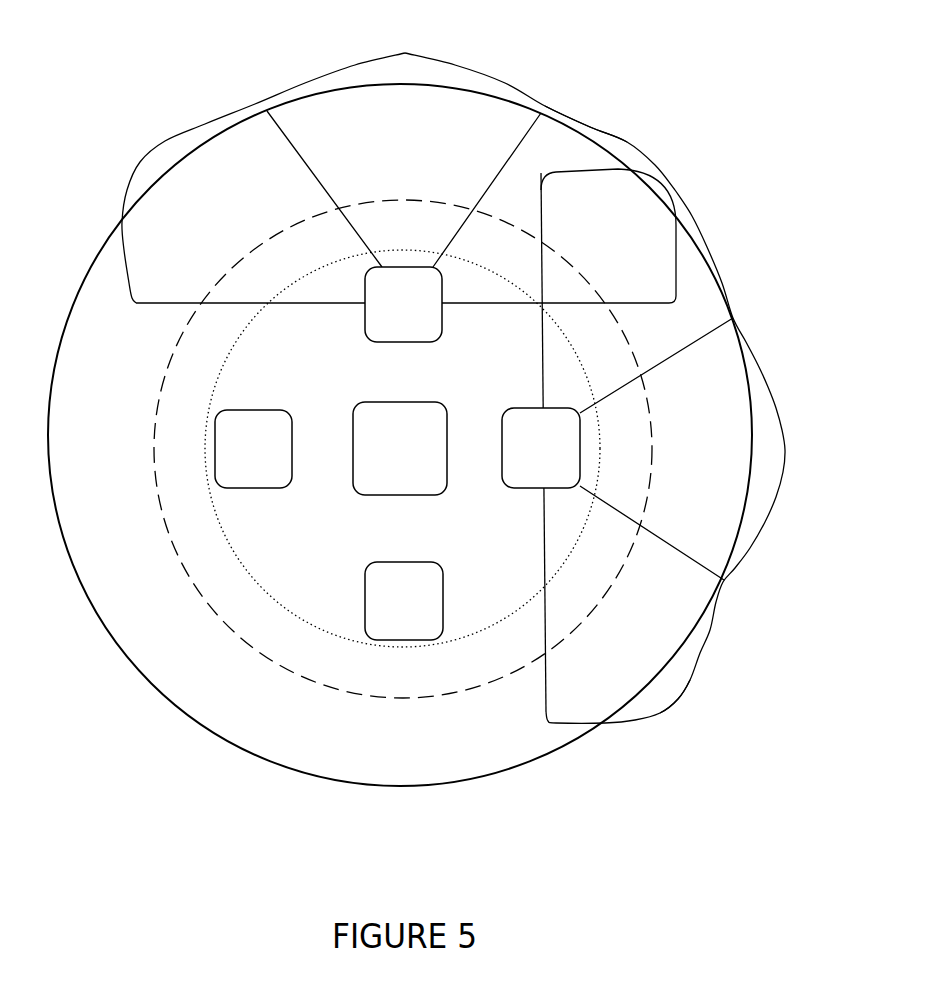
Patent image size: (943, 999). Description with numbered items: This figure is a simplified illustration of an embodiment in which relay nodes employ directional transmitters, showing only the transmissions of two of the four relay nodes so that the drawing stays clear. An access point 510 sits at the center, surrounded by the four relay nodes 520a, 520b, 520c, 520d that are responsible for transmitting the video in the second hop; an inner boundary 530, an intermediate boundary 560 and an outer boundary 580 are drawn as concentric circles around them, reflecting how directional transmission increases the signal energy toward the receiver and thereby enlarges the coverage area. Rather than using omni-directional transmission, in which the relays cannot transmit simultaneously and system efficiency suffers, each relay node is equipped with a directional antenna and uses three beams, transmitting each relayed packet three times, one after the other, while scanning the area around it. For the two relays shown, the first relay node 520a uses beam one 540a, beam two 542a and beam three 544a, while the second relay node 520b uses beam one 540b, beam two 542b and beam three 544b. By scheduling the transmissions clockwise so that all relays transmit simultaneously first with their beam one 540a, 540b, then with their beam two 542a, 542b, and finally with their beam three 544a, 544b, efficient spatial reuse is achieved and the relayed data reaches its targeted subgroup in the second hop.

The access point 510 is at (400, 495).
The relay node 520a is at (413, 342).
The relay node 520b is at (503, 437).
The relay node 520c is at (366, 592).
The relay node 520d is at (254, 488).
The inner coverage boundary 530 is at (237, 337).
The beam 1 540a is at (153, 150).
The beam 1 540b is at (702, 212).
The beam 2 542a is at (406, 54).
The beam 2 542b is at (752, 540).
The beam 3 544a is at (633, 147).
The beam 3 544b is at (683, 690).
The intermediate coverage boundary 560 is at (154, 450).
The outer cell boundary 580 is at (396, 787).